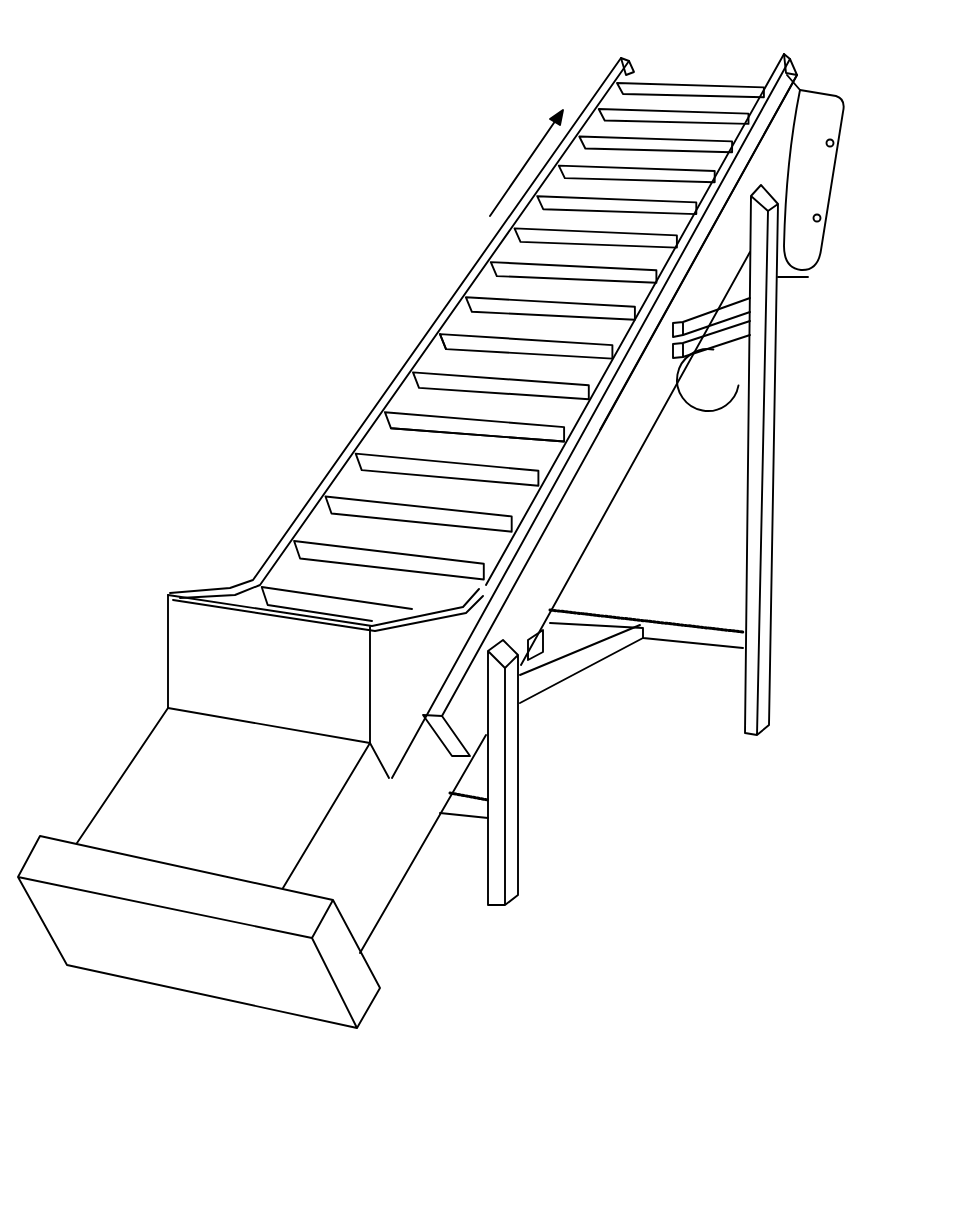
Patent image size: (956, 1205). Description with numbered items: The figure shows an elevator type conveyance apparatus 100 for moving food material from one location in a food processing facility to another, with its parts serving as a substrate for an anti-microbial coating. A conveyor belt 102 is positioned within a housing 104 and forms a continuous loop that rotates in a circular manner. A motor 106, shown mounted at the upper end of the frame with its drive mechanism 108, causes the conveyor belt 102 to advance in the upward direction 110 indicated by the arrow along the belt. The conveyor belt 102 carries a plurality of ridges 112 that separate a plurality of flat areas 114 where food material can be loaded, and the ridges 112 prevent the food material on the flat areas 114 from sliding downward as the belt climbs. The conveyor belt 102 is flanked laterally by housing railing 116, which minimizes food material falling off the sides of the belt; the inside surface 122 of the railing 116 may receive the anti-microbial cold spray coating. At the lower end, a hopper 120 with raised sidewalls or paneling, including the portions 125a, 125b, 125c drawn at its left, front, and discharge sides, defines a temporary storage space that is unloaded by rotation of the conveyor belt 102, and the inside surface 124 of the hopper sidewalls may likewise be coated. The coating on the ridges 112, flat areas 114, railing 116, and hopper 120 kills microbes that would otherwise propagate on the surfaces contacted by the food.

The elevator type conveyance apparatus 100 is at (397, 188).
The conveyor belt 102 is at (703, 73).
The housing 104 is at (612, 473).
The motor 106 is at (715, 393).
The motor 108 is at (808, 262).
The upward direction 110 is at (522, 167).
The ridges 112 is at (422, 410).
The flat areas 114 is at (418, 452).
The housing railing 116 is at (450, 300).
The hopper 120 is at (166, 653).
The inside surface of railing 122 is at (432, 357).
The inside surface of the sidewalls of hopper 124 is at (240, 597).
The hopper rear wall 125a is at (200, 597).
The hopper front wall 125b is at (203, 620).
The hopper chute 125c is at (388, 758).